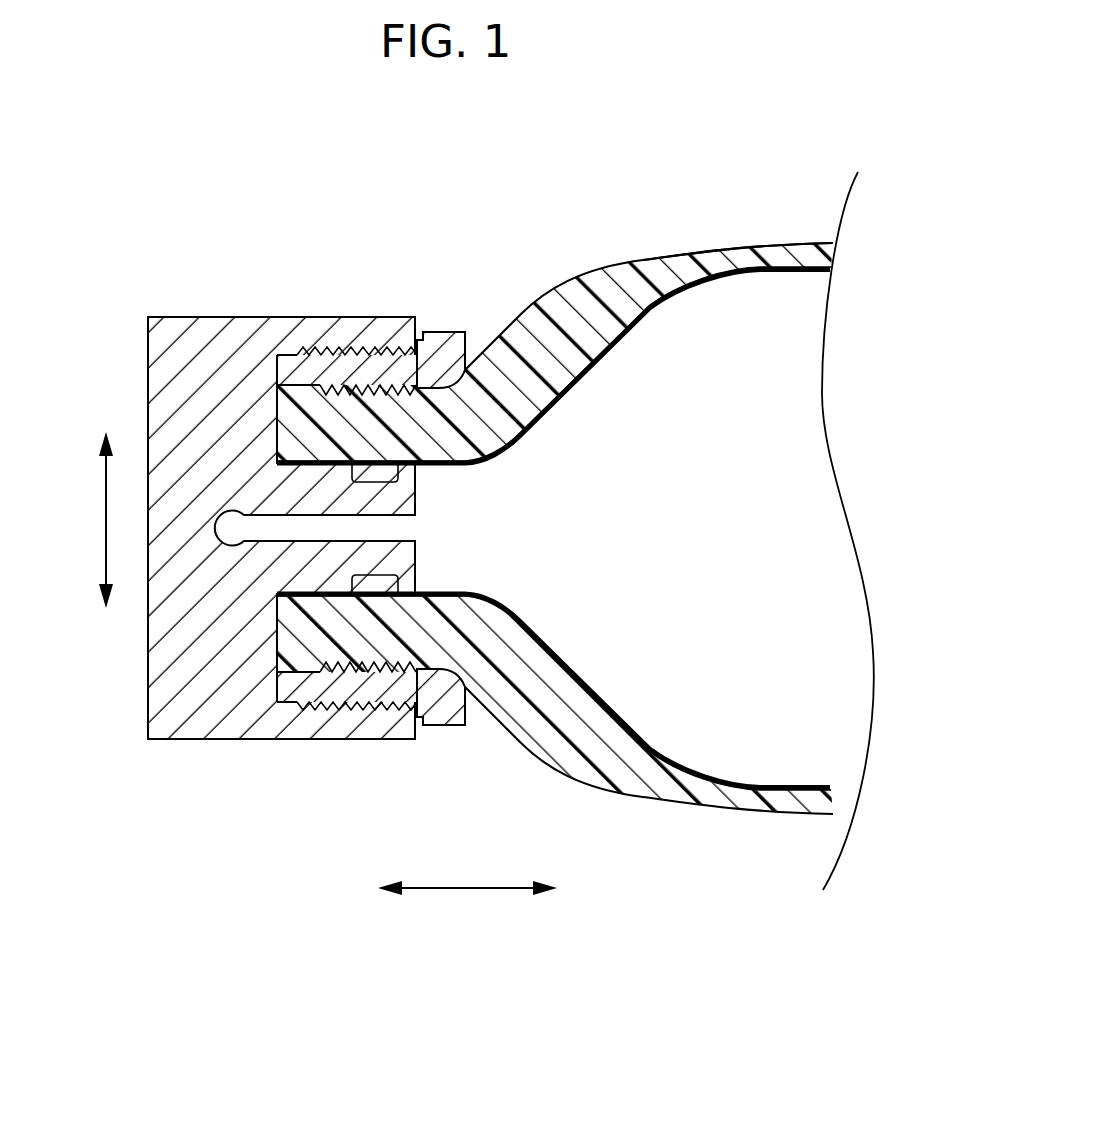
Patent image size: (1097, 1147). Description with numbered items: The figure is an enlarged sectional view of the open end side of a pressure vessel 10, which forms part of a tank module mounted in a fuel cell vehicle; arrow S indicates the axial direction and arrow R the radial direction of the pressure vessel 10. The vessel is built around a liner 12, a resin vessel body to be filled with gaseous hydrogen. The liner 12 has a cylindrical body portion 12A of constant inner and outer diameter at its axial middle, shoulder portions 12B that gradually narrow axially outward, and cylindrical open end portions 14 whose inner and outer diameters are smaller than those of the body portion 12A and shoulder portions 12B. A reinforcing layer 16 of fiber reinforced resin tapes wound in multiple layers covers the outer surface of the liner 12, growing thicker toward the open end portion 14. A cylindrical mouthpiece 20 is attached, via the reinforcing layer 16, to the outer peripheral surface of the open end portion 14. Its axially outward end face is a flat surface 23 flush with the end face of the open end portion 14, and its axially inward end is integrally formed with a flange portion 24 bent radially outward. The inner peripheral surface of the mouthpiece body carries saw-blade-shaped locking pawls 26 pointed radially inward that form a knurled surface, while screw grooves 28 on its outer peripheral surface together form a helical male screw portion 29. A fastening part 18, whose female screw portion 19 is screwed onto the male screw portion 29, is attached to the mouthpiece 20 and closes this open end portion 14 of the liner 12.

The pressure vessel 10 is at (610, 197).
The liner 12 is at (692, 290).
The body portion 12A is at (764, 273).
The shoulder portions 12B is at (583, 376).
The open end portion 14 is at (385, 481).
The reinforcing layer 16 is at (745, 242).
The fastening part 18 is at (147, 317).
The female screw portion 19 is at (305, 356).
The mouthpiece 20 is at (453, 331).
The flat surface 23 is at (277, 360).
The flange portion 24 is at (433, 330).
The locking pawls 26 is at (430, 390).
The screw grooves 28 is at (375, 345).
The male screw portion 29 is at (343, 347).
The arrow R is at (102, 516).
The arrow S is at (463, 892).